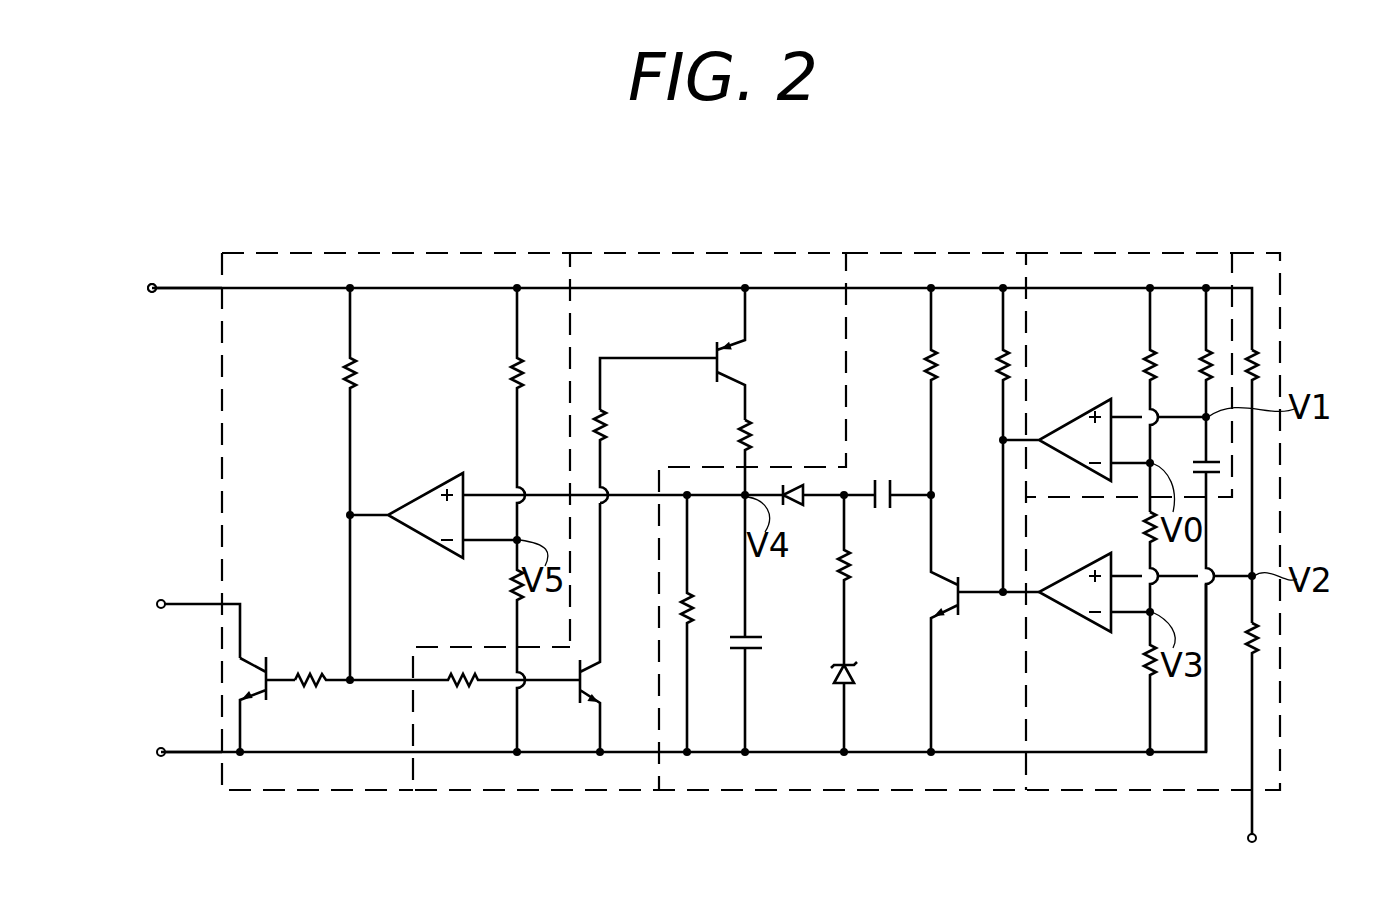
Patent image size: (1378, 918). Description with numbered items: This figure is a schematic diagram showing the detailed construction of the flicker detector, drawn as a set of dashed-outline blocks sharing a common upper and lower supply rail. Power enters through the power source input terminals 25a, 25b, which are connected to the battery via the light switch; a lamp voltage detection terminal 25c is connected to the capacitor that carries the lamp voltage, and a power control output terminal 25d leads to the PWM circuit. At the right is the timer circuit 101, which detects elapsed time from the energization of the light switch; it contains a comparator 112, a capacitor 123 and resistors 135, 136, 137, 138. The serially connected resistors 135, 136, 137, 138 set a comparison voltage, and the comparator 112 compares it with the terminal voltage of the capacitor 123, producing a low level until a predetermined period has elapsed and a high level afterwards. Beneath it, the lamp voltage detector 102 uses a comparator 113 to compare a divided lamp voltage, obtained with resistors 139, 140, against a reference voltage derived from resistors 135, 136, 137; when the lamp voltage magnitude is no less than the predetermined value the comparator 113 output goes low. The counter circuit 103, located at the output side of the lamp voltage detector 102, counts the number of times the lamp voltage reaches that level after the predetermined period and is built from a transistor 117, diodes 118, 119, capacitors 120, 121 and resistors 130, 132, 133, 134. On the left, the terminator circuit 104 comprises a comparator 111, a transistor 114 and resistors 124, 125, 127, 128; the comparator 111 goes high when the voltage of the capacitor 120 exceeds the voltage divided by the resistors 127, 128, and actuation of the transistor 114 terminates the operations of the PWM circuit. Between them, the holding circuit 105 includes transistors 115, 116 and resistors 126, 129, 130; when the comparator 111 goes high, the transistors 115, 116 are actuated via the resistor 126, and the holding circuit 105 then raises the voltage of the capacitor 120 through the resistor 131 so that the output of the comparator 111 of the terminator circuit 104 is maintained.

The power source input terminal 25a is at (174, 268).
The power source input terminal 25b is at (178, 732).
The lamp voltage detection terminal 25c is at (1279, 768).
The power control output terminal 25d is at (187, 608).
The timer circuit 101 is at (1125, 253).
The lamp voltage detector 102 is at (1118, 790).
The counter circuit 103 is at (940, 253).
The terminator circuit 104 is at (400, 253).
The holding circuit 105 is at (760, 253).
The comparator 111 is at (412, 500).
The comparator 112 is at (1055, 426).
The comparator 113 is at (1060, 611).
The transistor 114 is at (249, 658).
The transistor 115 is at (598, 694).
The transistor 116 is at (745, 357).
The transistor 117 is at (936, 590).
The diode 118 is at (797, 505).
The diode 119 is at (856, 672).
The capacitor 120 is at (752, 652).
The capacitor 121 is at (884, 478).
The capacitor 123 is at (1225, 465).
The resistor 124 is at (320, 688).
The resistor 125 is at (349, 360).
The resistor 126 is at (458, 688).
The resistor 127 is at (515, 360).
The resistor 128 is at (511, 586).
The resistor 129 is at (605, 416).
The resistor 130 is at (692, 608).
The resistor 131 is at (752, 428).
The resistor 132 is at (849, 566).
The resistor 133 is at (925, 357).
The resistor 134 is at (998, 357).
The resistor 135 is at (1145, 357).
The resistor 136 is at (1143, 519).
The resistor 137 is at (1143, 661).
The resistor 138 is at (1200, 357).
The resistor 139 is at (1256, 355).
The resistor 140 is at (1262, 640).